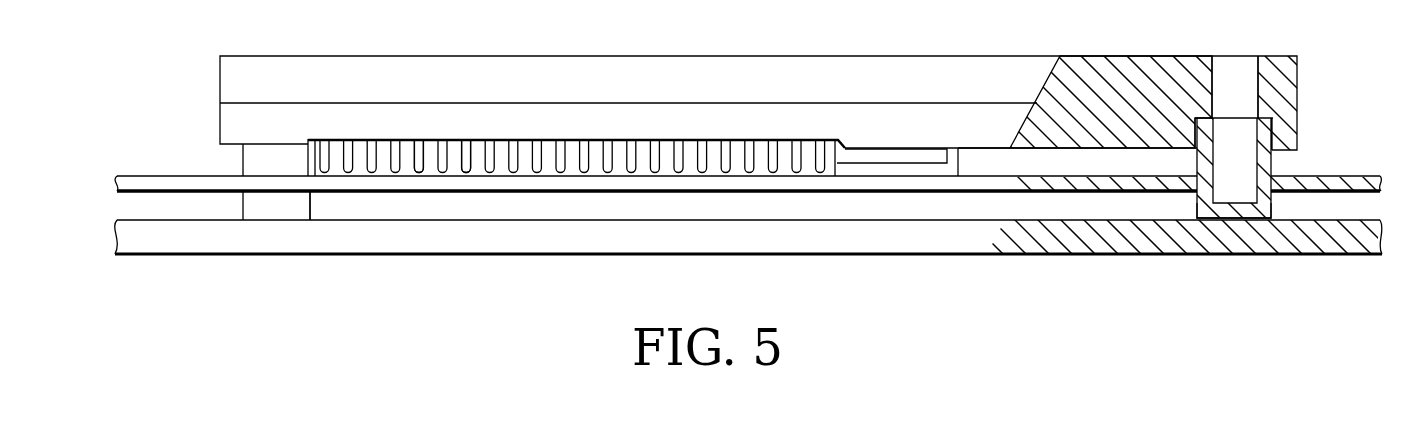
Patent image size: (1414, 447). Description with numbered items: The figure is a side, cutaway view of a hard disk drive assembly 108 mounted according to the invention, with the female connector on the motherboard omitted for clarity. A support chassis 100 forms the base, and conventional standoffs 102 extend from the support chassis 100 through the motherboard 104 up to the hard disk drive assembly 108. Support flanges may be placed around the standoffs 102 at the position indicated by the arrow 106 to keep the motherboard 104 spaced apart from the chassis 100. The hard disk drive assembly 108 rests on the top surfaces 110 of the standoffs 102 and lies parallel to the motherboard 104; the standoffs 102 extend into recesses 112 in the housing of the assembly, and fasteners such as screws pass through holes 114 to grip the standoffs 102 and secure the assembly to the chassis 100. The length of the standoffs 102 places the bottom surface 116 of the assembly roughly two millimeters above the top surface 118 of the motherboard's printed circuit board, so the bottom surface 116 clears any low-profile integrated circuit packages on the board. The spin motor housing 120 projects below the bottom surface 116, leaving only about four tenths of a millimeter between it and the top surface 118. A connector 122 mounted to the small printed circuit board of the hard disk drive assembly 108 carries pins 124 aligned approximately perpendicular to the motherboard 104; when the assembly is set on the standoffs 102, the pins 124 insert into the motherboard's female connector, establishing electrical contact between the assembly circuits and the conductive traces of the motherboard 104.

The support chassis 100 is at (163, 240).
The standoffs 102 is at (282, 210).
The motherboard 104 is at (148, 180).
The arrow 106 is at (332, 218).
The hard disk drive assembly 108 is at (333, 58).
The top surfaces 110 is at (1205, 100).
The recesses 112 is at (1270, 125).
The holes 114 is at (1237, 75).
The bottom surface 116 is at (980, 164).
The top surface 118 is at (954, 137).
The spin motor housing 120 is at (877, 155).
The connector 122 is at (557, 115).
The pins 124 is at (468, 157).